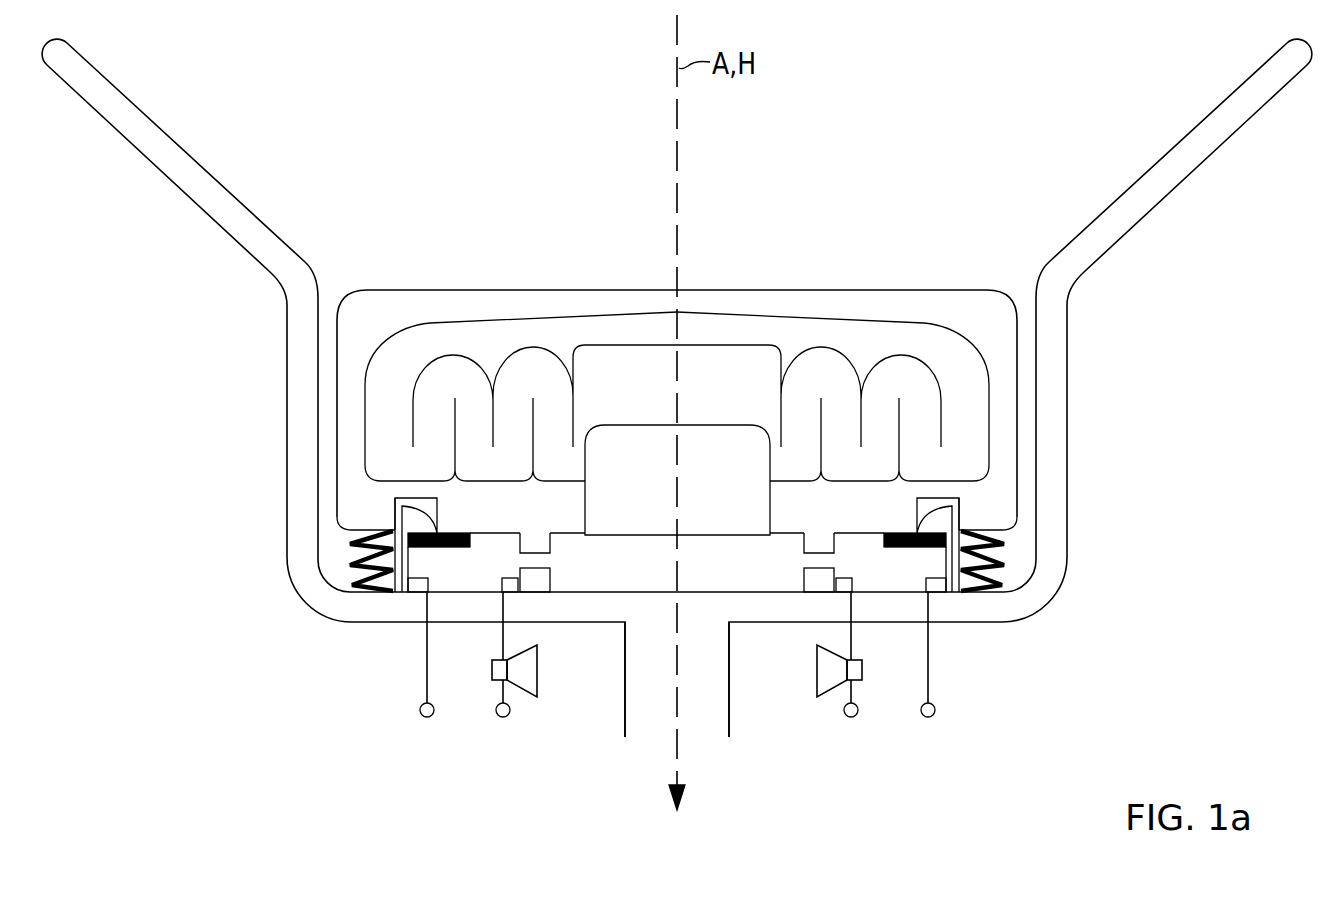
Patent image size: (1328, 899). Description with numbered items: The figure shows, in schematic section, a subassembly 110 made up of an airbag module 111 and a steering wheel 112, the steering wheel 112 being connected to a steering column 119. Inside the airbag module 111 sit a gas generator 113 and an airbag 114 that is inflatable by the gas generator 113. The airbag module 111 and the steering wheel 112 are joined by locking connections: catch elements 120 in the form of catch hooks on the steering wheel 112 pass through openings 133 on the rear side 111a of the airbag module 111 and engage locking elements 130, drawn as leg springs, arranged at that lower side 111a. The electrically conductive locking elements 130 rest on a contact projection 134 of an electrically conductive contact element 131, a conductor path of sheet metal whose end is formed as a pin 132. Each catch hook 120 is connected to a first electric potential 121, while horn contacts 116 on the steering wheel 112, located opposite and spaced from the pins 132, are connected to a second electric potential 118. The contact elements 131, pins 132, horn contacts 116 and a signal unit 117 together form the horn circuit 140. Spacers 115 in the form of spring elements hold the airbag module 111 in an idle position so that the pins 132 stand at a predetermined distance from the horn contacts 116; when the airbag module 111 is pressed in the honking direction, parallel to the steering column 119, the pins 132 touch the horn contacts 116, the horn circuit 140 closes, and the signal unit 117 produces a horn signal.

The subassembly 110 is at (1080, 58).
The airbag module 111 is at (852, 290).
The lower side or rear of the airbag module 111a is at (575, 542).
The steering wheel 112 is at (1130, 235).
The gas generator 113 is at (712, 425).
The airbag 114 is at (450, 322).
The spacers 115 is at (352, 560).
The horn contacts 116 is at (550, 578).
The signal unit 117 is at (540, 668).
The second electric potential 118 is at (503, 718).
The steering column 119 is at (731, 726).
The catch elements 120 is at (393, 594).
The first electric potential 121 is at (427, 718).
The locking elements 130 is at (438, 552).
The contact element 131 is at (490, 532).
The pin 132 is at (537, 545).
The openings 133 is at (378, 517).
The contact projection 134 is at (465, 549).
The horn circuit 140 is at (408, 690).